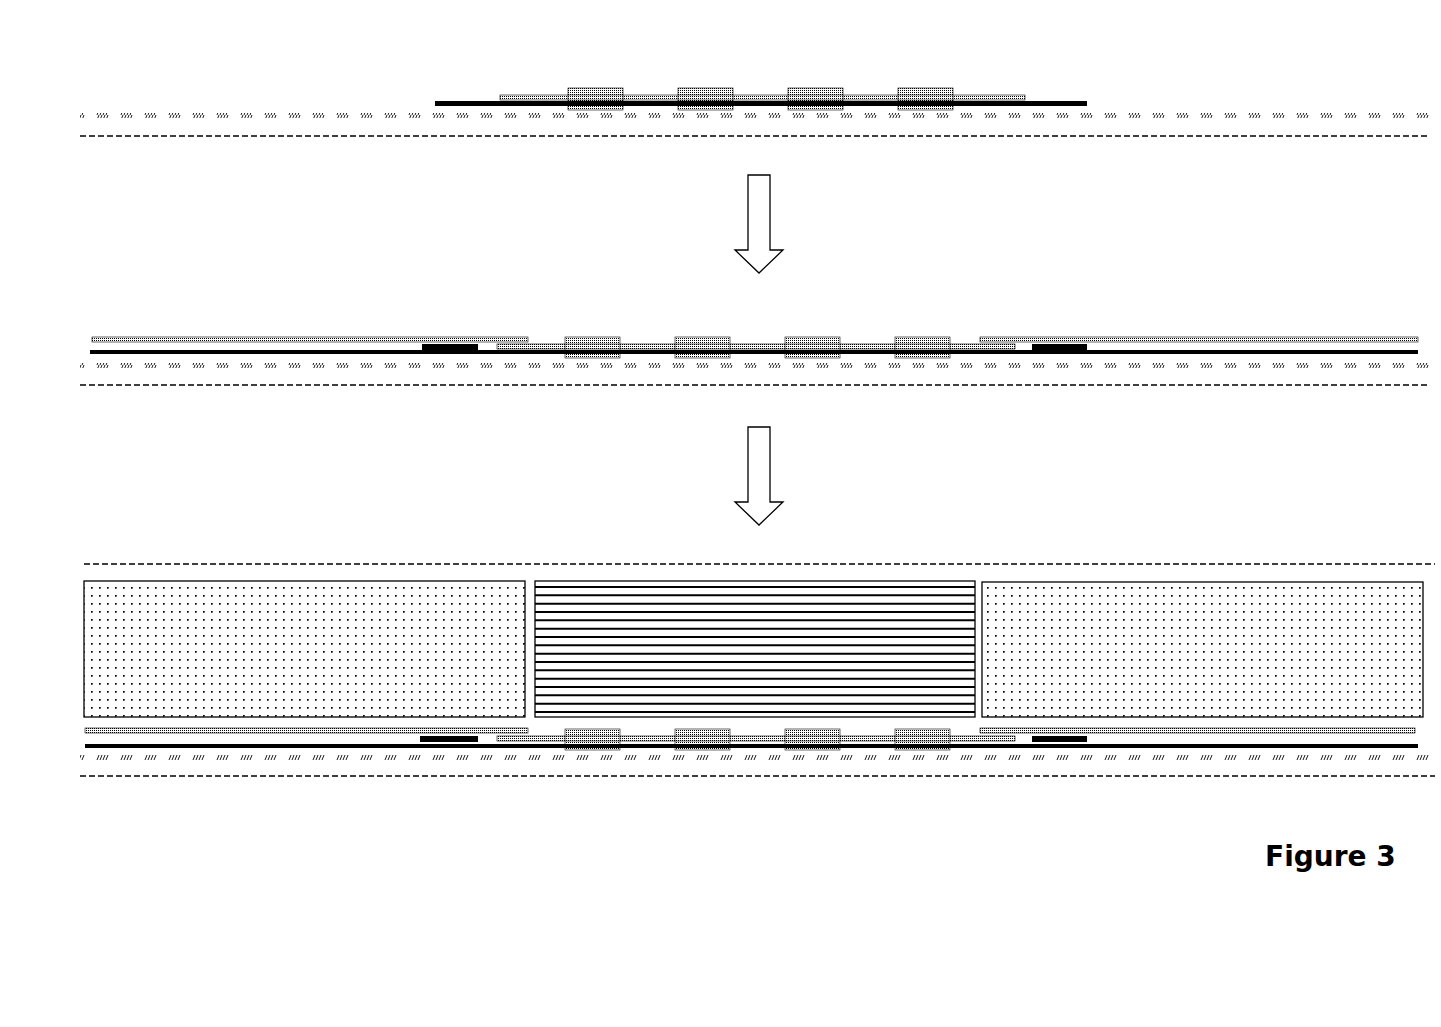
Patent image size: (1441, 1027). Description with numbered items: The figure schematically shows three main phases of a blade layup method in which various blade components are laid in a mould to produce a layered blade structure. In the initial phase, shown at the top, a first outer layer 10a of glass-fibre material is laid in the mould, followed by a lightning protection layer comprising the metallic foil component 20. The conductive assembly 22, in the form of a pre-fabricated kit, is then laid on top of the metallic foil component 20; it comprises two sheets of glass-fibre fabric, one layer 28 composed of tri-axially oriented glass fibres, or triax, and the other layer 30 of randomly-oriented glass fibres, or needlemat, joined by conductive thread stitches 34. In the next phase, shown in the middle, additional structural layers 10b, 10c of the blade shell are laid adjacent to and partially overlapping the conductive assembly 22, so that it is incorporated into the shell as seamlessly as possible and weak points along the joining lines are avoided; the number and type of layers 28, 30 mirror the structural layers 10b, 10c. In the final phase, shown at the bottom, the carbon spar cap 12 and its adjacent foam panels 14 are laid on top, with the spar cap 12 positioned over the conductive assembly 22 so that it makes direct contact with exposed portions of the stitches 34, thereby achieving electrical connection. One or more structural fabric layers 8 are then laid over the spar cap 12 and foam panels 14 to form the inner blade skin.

The structural fabric layers 8 is at (237, 564).
The first outer layer 10a is at (236, 138).
The structural layer 10b is at (388, 354).
The structural layer 10c is at (327, 337).
The carbon spar cap 12 is at (575, 581).
The foam panels 14 is at (357, 581).
The metallic foil component 20 is at (160, 117).
The conductive assembly 22 is at (1040, 66).
The layer of tri-axially oriented glass fibres 28 is at (970, 95).
The layer of randomly-oriented glass fibres 30 is at (1077, 101).
The conductive thread stitches 34 is at (622, 95).